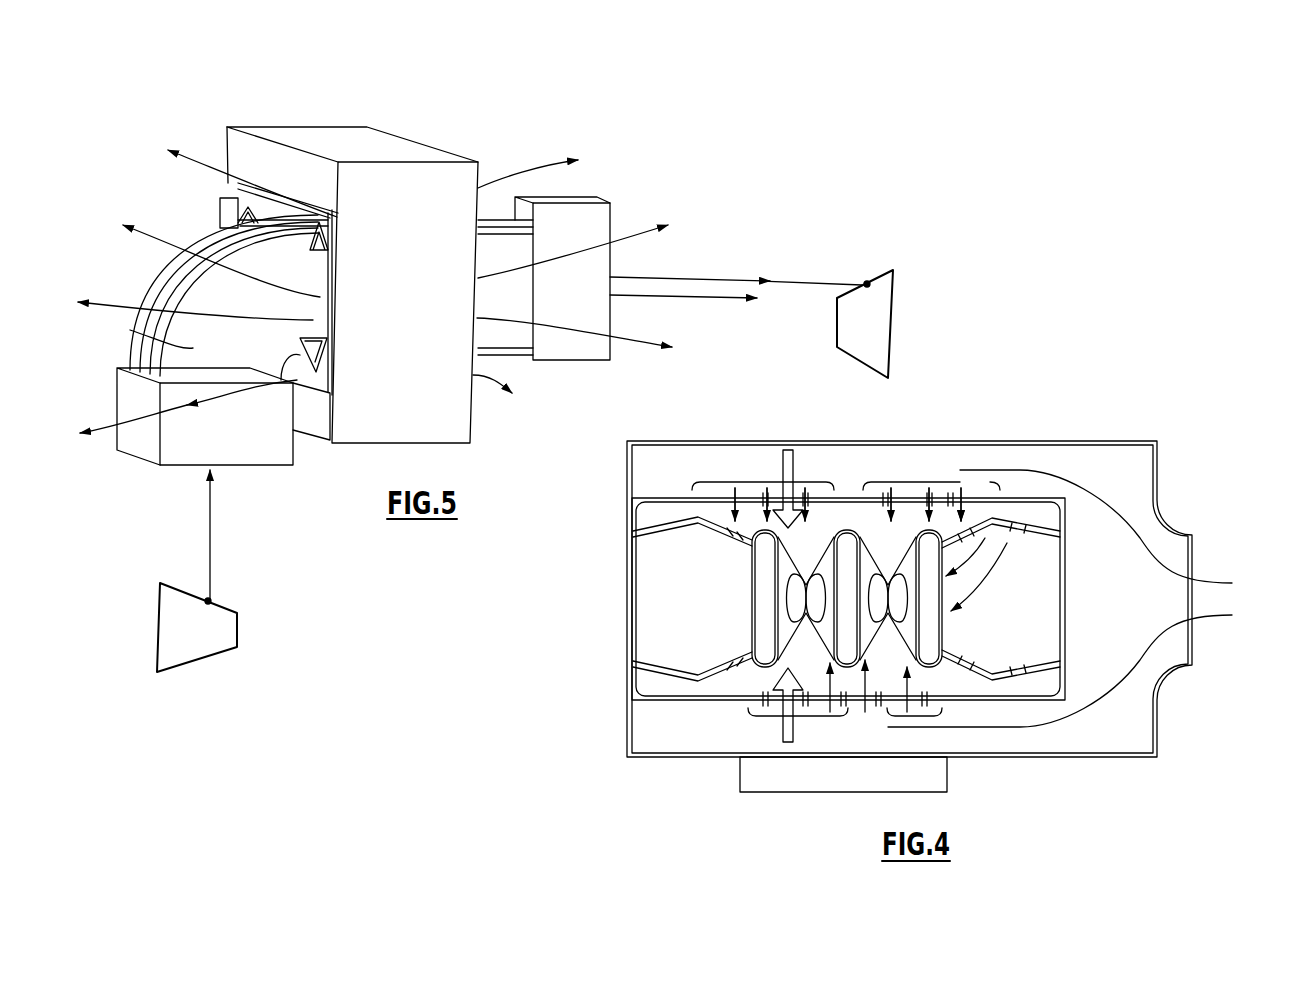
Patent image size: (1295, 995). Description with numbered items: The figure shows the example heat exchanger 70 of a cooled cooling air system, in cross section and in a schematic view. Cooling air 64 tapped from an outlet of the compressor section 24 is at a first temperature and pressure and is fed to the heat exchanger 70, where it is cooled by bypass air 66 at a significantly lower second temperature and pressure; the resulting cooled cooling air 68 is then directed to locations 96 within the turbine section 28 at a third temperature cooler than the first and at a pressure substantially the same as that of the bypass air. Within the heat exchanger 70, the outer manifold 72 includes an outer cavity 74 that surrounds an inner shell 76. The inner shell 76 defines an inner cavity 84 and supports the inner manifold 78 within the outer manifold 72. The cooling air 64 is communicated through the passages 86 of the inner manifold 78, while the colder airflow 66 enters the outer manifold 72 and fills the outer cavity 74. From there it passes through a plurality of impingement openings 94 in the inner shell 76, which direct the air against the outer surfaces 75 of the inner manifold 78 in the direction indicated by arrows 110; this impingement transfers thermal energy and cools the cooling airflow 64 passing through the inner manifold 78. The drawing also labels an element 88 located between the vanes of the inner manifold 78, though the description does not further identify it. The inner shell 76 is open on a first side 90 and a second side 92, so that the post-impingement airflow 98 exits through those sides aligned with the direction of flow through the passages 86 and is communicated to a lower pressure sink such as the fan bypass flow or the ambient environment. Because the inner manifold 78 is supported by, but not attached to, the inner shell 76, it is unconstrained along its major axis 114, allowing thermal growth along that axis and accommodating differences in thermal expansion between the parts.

In FIG. 5, the compressor section 24 is at (177, 668).
In FIG. 5, the turbine section 28 is at (846, 333).
In FIG. 5, the cooling air 64 is at (207, 562).
In FIG. 4, the bypass air 66 is at (1232, 615).
In FIG. 5, the cooled cooling air 68 is at (663, 277).
In FIG. 5, the heat exchanger 70 is at (424, 115).
In FIG. 4, the heat exchanger 70 is at (1112, 395).
In FIG. 5, the outer manifold 72 is at (318, 135).
In FIG. 4, the outer manifold 72 is at (1160, 442).
In FIG. 4, the outer cavity 74 is at (1122, 480).
In FIG. 4, the outer surfaces 75 is at (818, 556).
In FIG. 4, the inner shell 76 is at (1017, 700).
In FIG. 5, the inner manifold 78 is at (165, 346).
In FIG. 4, the inner manifold 78 is at (940, 621).
In FIG. 4, the inner cavity 84 is at (960, 684).
In FIG. 4, the passages 86 is at (920, 634).
In FIG. 4, the upper vortex chambers 88 is at (897, 596).
In FIG. 5, the first side 90 is at (476, 400).
In FIG. 5, the second side 92 is at (236, 190).
In FIG. 5, the impingement openings 94 is at (228, 599).
In FIG. 4, the impingement openings 94 is at (767, 482).
In FIG. 5, the locations 96 is at (866, 278).
In FIG. 5, the post-impingement airflow 98 is at (172, 178).
In FIG. 4, the arrows 110 is at (788, 448).
In FIG. 5, the major axis 114 is at (673, 300).